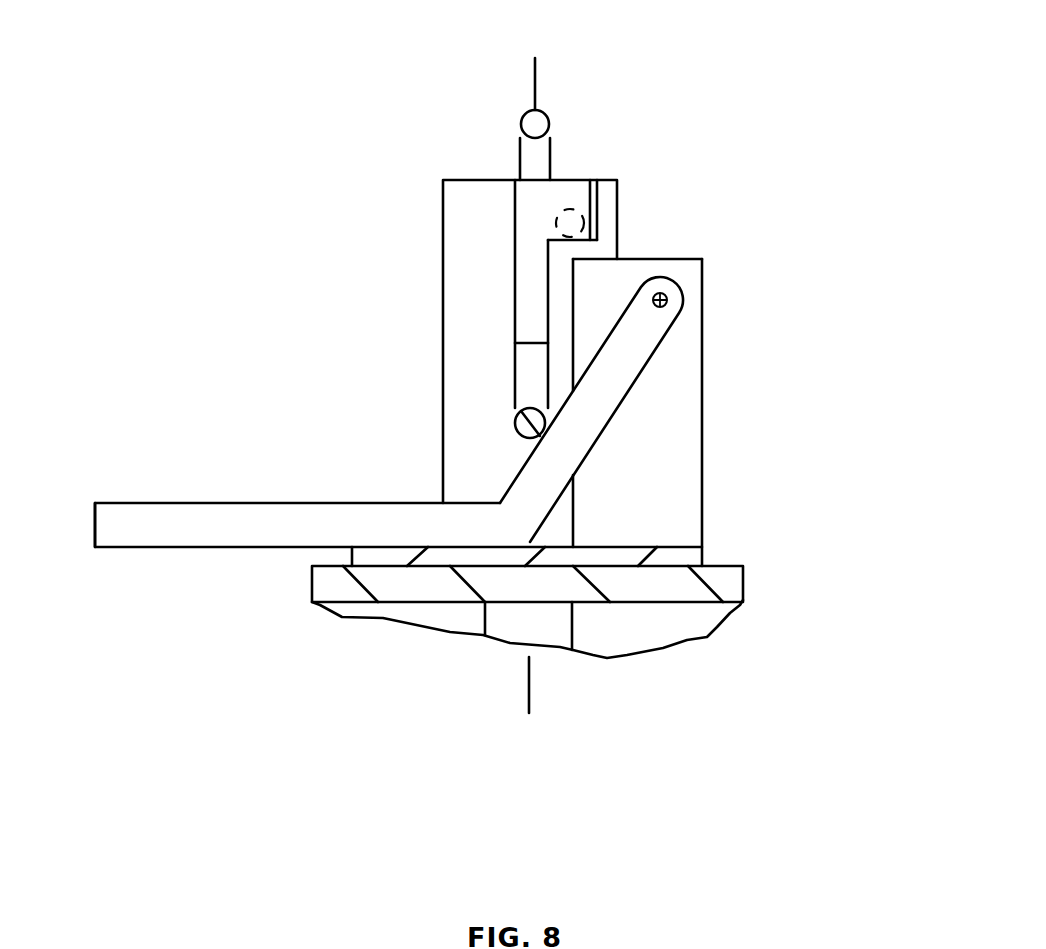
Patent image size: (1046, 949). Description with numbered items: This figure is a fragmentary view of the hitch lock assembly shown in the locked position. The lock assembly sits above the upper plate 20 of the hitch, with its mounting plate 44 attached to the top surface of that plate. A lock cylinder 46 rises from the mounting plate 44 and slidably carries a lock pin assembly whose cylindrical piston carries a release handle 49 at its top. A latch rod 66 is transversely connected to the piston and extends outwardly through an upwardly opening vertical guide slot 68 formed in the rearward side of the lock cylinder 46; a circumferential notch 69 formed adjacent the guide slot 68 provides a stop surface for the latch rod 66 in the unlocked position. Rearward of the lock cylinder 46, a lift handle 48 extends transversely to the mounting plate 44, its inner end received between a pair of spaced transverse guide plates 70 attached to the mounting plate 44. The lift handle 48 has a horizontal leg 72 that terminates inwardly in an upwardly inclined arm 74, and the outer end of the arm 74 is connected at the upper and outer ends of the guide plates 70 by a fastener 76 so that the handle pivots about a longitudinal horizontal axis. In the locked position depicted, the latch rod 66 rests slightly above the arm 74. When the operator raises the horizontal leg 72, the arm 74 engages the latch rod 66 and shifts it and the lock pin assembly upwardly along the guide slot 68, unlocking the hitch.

The upper plate 20 is at (732, 582).
The mounting plate 44 is at (685, 557).
The lock cylinder 46 is at (443, 213).
The lift handle 48 is at (267, 500).
The release handle 49 is at (527, 118).
The latch rod 66 is at (522, 425).
The vertical guide slot 68 is at (533, 292).
The circumferential notch 69 is at (681, 204).
The guide plates 70 is at (703, 357).
The horizontal leg 72 is at (177, 525).
The upwardly inclined arm 74 is at (667, 409).
The fastener 76 is at (668, 298).